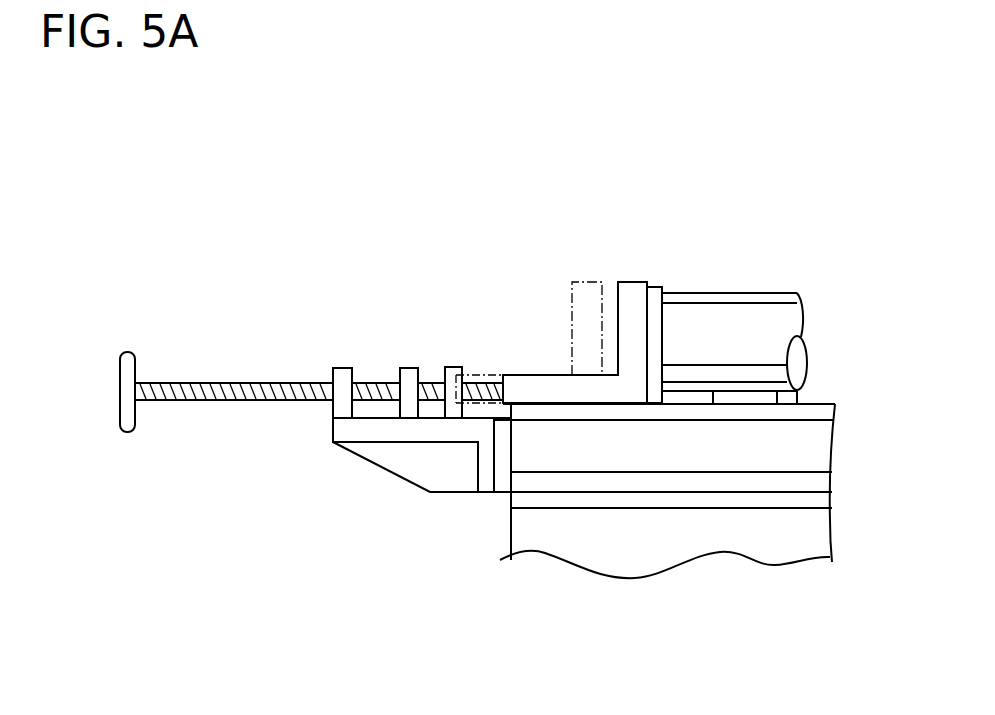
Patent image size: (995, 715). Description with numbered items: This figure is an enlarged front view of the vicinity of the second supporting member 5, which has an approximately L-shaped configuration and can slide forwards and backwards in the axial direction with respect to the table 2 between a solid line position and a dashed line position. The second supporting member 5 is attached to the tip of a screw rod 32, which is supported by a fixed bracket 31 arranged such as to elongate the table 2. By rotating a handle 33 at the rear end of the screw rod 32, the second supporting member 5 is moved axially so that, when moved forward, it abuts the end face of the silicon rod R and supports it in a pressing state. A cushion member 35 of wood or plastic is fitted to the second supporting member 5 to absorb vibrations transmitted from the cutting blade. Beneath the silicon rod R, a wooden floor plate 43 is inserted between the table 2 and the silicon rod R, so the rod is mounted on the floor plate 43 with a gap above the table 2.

The table 2 is at (530, 530).
The second supporting member 5 is at (625, 282).
The fixed bracket 31 is at (402, 455).
The screw rod 32 is at (247, 392).
The handle 33 is at (128, 351).
The cushion member 35 is at (657, 287).
The floor plate 43 is at (760, 398).
The silicon rod R is at (760, 292).